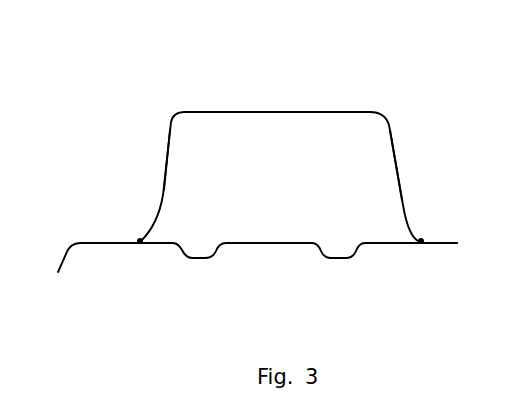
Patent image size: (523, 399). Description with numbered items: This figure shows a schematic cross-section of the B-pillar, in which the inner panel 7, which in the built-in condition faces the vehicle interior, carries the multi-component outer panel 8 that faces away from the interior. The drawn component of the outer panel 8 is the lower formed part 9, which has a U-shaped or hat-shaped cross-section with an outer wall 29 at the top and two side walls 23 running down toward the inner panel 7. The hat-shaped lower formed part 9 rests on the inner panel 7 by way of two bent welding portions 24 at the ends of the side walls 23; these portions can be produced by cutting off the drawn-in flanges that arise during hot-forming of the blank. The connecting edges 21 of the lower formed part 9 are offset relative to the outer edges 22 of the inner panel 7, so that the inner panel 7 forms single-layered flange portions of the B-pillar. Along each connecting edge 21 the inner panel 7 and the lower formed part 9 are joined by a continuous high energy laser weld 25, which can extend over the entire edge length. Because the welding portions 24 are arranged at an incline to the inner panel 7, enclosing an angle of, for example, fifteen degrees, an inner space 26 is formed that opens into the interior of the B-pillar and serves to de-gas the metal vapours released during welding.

The inner panel 7 is at (384, 245).
The outer panel 8 is at (240, 109).
The lower formed part 9 is at (334, 110).
The connecting edges 21 is at (137, 244).
The outer edges 22 is at (243, 280).
The side walls 23 is at (163, 162).
The bent welding portions 24 is at (138, 241).
The weld 25 is at (425, 240).
The inner space 26 is at (286, 198).
The outer wall 29 is at (275, 110).